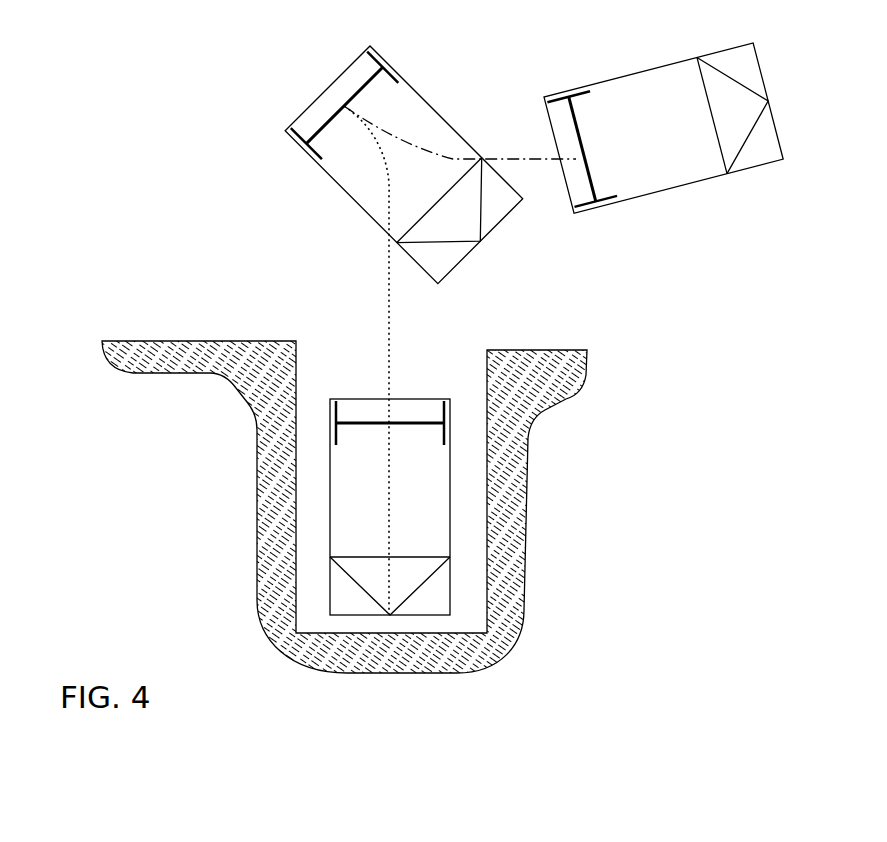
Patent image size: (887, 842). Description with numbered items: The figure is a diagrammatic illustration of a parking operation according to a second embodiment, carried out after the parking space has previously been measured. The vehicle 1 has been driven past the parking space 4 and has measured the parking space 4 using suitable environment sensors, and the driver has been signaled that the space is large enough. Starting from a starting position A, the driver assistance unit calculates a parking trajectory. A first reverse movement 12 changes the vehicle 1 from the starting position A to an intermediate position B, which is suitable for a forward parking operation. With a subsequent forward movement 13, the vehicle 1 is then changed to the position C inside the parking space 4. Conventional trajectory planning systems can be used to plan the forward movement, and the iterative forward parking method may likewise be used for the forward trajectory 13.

The vehicle 1 is at (702, 134).
The parking space 4 is at (580, 562).
The first reverse movement 12 is at (514, 160).
The forward movement 13 is at (389, 315).
The starting position A is at (655, 130).
The intermediate position B is at (404, 165).
The position in the parking space C is at (207, 559).